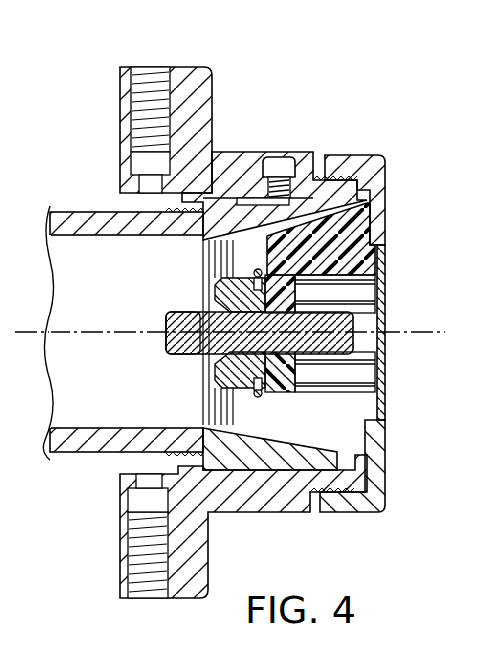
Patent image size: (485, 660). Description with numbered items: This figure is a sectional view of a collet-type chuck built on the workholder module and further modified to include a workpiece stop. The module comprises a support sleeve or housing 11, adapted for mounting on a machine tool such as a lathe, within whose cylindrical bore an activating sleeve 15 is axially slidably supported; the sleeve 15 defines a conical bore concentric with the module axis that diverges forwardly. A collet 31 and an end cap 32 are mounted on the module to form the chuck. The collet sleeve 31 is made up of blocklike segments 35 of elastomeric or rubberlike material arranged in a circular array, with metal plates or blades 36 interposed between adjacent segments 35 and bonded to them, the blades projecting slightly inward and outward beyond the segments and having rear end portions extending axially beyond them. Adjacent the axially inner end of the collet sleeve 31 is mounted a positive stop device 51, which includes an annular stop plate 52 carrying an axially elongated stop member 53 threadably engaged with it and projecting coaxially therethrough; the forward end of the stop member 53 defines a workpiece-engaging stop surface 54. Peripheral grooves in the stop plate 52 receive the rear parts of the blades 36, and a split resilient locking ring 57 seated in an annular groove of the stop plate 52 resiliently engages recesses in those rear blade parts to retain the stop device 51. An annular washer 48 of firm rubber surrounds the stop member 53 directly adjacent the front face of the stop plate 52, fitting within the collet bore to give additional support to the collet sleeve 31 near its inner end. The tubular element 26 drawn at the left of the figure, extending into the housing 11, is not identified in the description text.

The support sleeve or housing 11 is at (203, 96).
The activating sleeve 15 is at (258, 460).
The pipe 26 is at (78, 222).
The collet sleeve 31 is at (384, 272).
The end cap 32 is at (386, 182).
The blocklike segments 35 is at (343, 263).
The metal plates or blades 36 is at (365, 405).
The annular washer 48 is at (287, 378).
The positive stop device 51 is at (188, 371).
The annular stop plate 52 is at (245, 302).
The stop member 53 is at (180, 340).
The workpiece-engaging stop surface 54 is at (353, 340).
The split resilient locking ring 57 is at (260, 396).